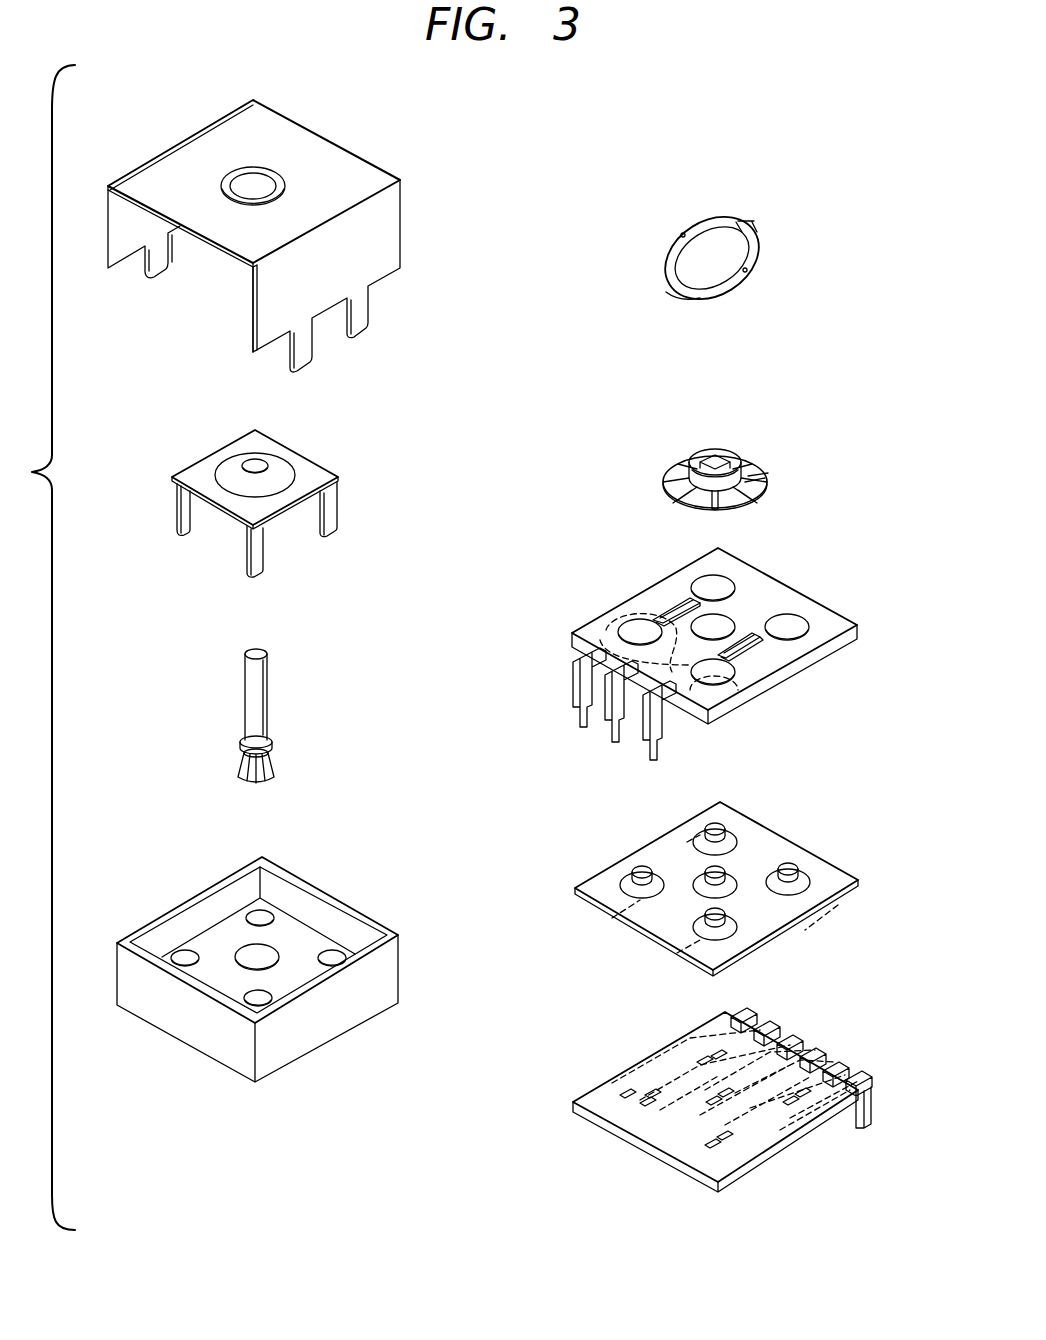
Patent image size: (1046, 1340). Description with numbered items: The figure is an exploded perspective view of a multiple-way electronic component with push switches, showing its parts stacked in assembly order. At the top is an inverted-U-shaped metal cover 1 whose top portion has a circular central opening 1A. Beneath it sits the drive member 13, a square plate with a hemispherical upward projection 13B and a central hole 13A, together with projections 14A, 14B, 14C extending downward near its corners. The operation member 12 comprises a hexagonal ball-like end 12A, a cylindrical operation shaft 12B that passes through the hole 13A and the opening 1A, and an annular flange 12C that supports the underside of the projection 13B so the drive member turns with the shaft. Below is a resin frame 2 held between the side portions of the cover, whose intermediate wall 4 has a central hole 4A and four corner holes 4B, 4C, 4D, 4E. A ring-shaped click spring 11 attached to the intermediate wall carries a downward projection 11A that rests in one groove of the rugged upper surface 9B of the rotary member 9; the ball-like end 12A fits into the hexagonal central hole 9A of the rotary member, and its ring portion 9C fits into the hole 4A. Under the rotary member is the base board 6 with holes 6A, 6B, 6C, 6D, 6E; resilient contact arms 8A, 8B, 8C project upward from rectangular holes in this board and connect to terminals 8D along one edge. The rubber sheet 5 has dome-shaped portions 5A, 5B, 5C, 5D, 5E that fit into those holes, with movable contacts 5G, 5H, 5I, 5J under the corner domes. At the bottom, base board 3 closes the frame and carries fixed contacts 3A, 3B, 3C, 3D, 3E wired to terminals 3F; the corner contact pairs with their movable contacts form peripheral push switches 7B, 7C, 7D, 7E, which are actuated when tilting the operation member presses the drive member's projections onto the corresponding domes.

The cover 1 is at (290, 228).
The central opening 1A is at (261, 179).
The drive member 13 is at (257, 488).
The central hole 13A is at (266, 462).
The dome-shaped projection 13B is at (228, 467).
The projection 14A is at (337, 520).
The projection 14B is at (262, 560).
The projection 14C is at (177, 517).
The operation member 12 is at (321, 716).
The hexagonal ball-like end 12A is at (275, 768).
The operation shaft 12B is at (266, 686).
The annular flange 12C is at (271, 741).
The frame 2 is at (294, 973).
The intermediate wall 4 is at (297, 980).
The central hole 4A is at (263, 955).
The corner hole 4B is at (334, 954).
The corner hole 4C is at (260, 1002).
The corner hole 4D is at (183, 954).
The corner hole 4E is at (263, 917).
The click spring 11 is at (738, 242).
The downward projection 11A is at (747, 228).
The rotary member 9 is at (754, 447).
The central hole 9A is at (711, 458).
The rugged upper surface 9B is at (738, 468).
The ring portion 9C is at (750, 485).
The base board 6 is at (703, 658).
The hole 6A is at (730, 622).
The hole 6B is at (794, 634).
The hole 6C is at (715, 677).
The hole 6D is at (628, 622).
The hole 6E is at (714, 582).
The resilient contact arm 8A is at (660, 598).
The resilient contact arm 8B is at (672, 592).
The resilient contact arm 8C is at (750, 645).
The terminals 8D is at (614, 740).
The rubber sheet 5 is at (729, 886).
The dome-shaped portion 5A is at (736, 883).
The dome-shaped portion 5B is at (800, 880).
The dome-shaped portion 5C is at (730, 932).
The dome-shaped portion 5D is at (620, 880).
The dome-shaped portion 5E is at (722, 840).
The movable contact 5G is at (840, 905).
The movable contact 5H is at (677, 953).
The movable contact 5I is at (612, 918).
The movable contact 5J is at (687, 841).
The base board 3 is at (725, 1107).
The fixed contacts 3A is at (730, 1093).
The fixed contacts 3B is at (788, 1103).
The fixed contacts 3C is at (727, 1140).
The fixed contacts 3D is at (640, 1087).
The fixed contacts 3E is at (715, 1048).
The terminals 3F is at (817, 1043).
The peripheral push switch 7B is at (843, 1077).
The peripheral push switch 7C is at (733, 1147).
The peripheral push switch 7D is at (647, 1098).
The peripheral push switch 7E is at (700, 1055).